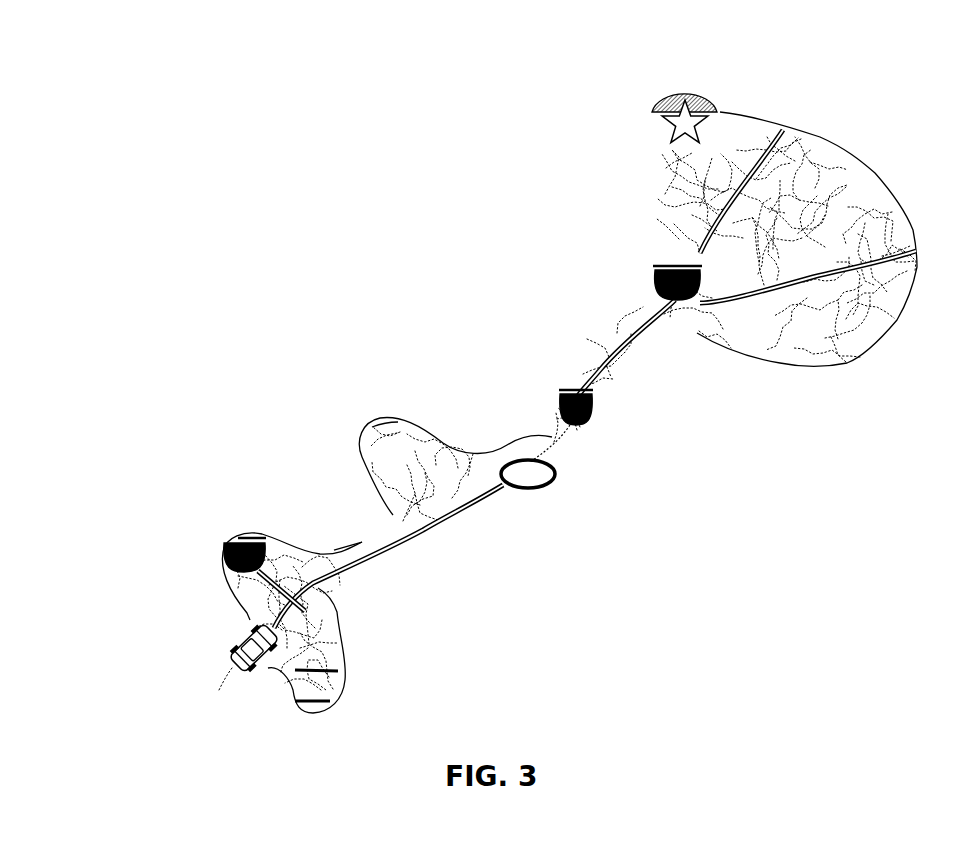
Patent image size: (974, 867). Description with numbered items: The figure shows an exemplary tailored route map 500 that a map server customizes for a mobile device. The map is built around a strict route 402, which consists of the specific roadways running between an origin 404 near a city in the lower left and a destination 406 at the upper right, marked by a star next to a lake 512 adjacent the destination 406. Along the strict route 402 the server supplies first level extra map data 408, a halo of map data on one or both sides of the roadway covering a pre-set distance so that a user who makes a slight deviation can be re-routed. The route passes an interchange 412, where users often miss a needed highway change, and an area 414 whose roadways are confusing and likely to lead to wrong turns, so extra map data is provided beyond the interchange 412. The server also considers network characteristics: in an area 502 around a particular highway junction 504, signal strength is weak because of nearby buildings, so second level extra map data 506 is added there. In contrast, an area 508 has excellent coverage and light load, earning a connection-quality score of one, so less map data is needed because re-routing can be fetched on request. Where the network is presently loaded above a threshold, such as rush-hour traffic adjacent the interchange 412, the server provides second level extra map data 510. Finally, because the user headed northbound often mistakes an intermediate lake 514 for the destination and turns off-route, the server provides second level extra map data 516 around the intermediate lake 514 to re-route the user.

The route map 500 is at (470, 265).
The strict route 402 is at (697, 250).
The origin 404 is at (237, 642).
The destination 406 is at (652, 112).
The first level extra map data 408 is at (568, 448).
The interchange 412 is at (648, 338).
The area 414 is at (615, 378).
The area 502 is at (188, 618).
The highway junction 504 is at (298, 577).
The second level extra map data 506 is at (334, 548).
The area 508 is at (397, 574).
The second level extra map data 510 is at (791, 367).
The lake 512 is at (700, 92).
The intermediate lake 514 is at (393, 426).
The second level extra map data 516 is at (372, 427).